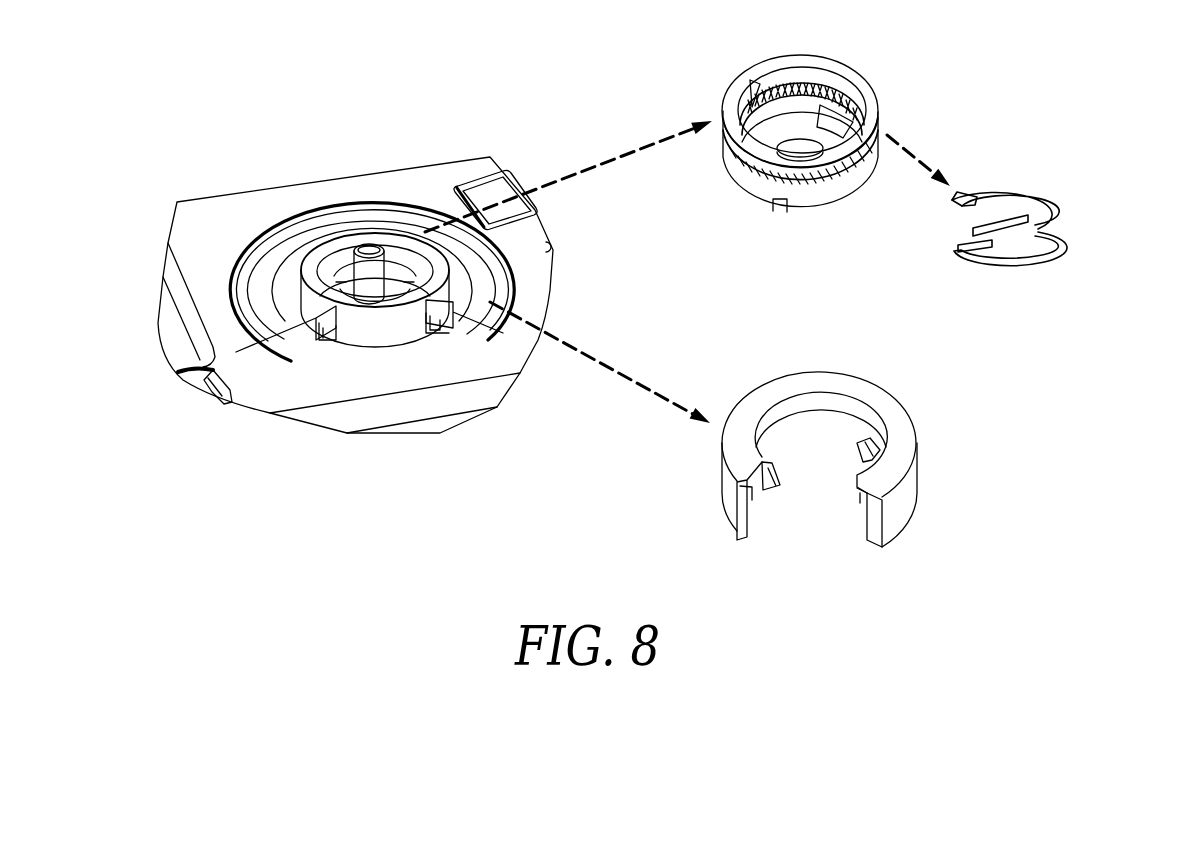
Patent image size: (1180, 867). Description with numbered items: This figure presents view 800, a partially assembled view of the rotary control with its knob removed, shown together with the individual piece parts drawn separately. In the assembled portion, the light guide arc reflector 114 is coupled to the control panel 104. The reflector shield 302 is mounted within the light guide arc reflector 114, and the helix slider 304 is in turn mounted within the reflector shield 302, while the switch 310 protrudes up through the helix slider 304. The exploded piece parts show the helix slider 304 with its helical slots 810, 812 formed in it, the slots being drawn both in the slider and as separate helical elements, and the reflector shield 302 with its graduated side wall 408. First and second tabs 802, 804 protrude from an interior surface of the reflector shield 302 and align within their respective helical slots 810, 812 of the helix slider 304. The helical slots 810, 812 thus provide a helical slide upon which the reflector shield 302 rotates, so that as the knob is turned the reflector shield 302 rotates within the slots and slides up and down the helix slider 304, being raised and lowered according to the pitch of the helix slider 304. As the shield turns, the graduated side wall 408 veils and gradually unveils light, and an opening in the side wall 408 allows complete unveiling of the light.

The control panel 104 is at (422, 178).
The light guide arc reflector 114 is at (253, 245).
The reflector shield 302 is at (290, 296).
The helix slider 304 is at (222, 383).
The switch 310 is at (369, 249).
The graduated side wall 408 is at (750, 490).
The view 800 is at (1142, 606).
The first tab 802 is at (762, 486).
The second tab 804 is at (857, 447).
The helical slot 810 is at (800, 90).
The helical slot 812 is at (850, 186).